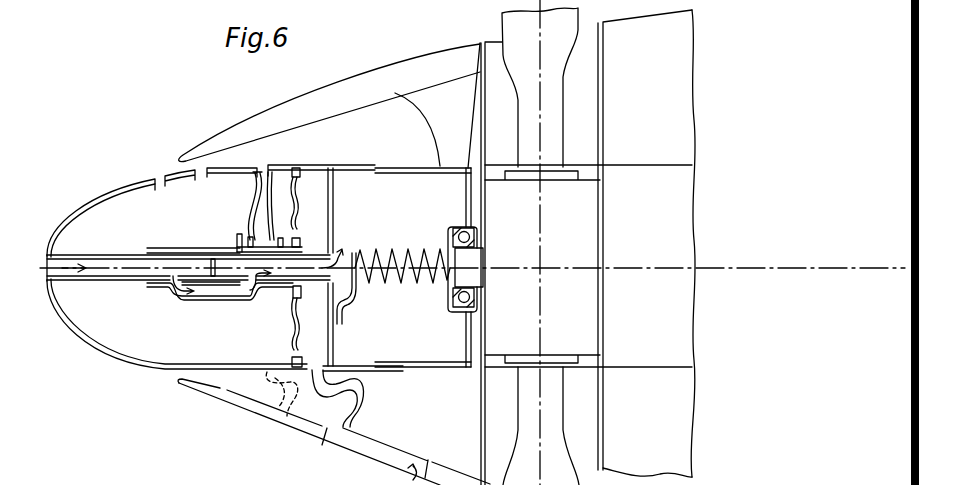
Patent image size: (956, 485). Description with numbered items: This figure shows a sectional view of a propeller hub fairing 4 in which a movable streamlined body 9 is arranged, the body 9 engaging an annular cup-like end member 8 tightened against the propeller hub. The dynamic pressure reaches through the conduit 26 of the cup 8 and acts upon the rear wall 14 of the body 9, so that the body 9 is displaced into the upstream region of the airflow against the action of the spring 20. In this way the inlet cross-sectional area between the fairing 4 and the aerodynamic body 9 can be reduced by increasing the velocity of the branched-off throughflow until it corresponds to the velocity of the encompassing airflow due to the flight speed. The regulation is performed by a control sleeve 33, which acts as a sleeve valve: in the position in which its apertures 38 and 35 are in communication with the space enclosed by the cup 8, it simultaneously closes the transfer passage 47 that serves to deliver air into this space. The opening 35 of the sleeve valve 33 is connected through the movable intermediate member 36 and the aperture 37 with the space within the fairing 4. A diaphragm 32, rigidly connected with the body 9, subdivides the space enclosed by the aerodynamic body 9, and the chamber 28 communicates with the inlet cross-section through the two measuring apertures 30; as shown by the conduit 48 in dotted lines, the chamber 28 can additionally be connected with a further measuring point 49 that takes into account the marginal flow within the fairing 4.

The fairing 4 is at (298, 437).
The cup 8 is at (435, 368).
The streamlined body 9 is at (140, 360).
The rear wall 14 is at (333, 221).
The spring 20 is at (383, 248).
The conduit 26 is at (95, 281).
The chamber 28 is at (318, 193).
The apertures 30 is at (205, 169).
The diaphragm 32 is at (298, 328).
The control sleeve 33 is at (198, 247).
The opening 35 is at (245, 238).
The intermediate member 36 is at (270, 192).
The aperture 37 is at (263, 170).
The aperture 38 is at (236, 256).
The transfer passage 47 is at (185, 300).
The conduit 48 is at (288, 387).
The measuring point 49 is at (220, 388).